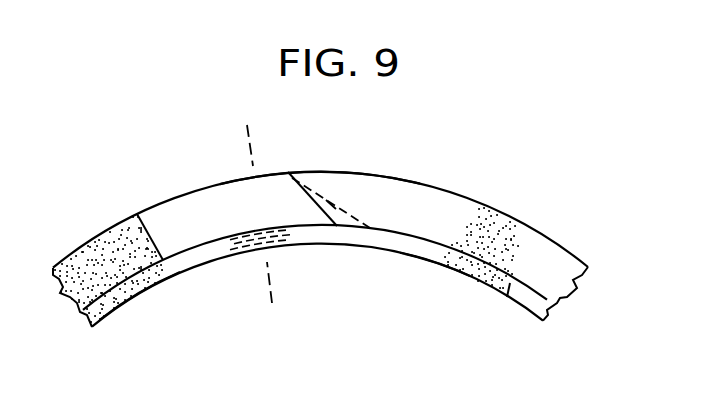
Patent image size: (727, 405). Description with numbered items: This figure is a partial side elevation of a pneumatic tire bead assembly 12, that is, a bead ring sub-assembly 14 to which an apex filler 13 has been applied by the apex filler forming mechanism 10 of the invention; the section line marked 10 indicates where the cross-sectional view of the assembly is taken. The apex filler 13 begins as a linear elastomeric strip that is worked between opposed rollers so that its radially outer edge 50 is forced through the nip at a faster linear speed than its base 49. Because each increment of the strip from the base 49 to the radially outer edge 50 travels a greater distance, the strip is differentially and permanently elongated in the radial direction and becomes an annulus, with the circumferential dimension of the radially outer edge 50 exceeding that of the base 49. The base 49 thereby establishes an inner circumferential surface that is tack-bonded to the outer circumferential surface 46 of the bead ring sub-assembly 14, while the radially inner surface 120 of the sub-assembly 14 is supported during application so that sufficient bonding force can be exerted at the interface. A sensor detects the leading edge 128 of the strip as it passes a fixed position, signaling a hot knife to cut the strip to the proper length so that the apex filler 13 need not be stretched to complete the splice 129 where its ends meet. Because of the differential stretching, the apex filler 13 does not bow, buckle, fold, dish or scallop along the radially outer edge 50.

The apex filler forming mechanism 10 is at (247, 125).
The pneumatic tire bead assembly 12 is at (482, 173).
The apex filler 13 is at (527, 230).
The bead ring sub-assembly 14 is at (432, 260).
The outer circumferential surface 46 is at (137, 214).
The base 49 is at (508, 298).
The radially outer edge 50 is at (402, 180).
The radially inner surface 120 is at (130, 304).
The leading edge 128 is at (330, 207).
The splice 129 is at (288, 172).